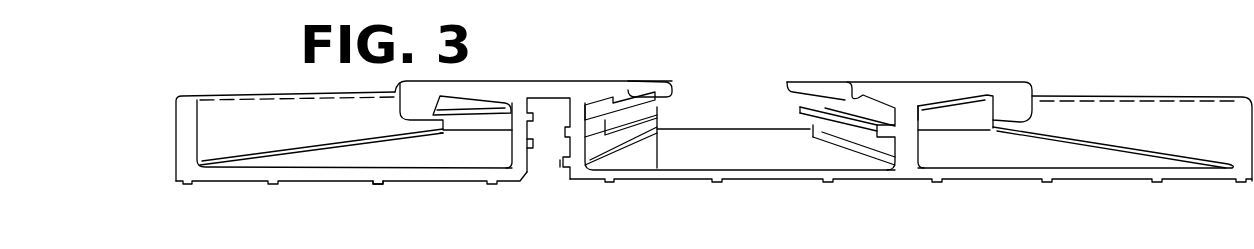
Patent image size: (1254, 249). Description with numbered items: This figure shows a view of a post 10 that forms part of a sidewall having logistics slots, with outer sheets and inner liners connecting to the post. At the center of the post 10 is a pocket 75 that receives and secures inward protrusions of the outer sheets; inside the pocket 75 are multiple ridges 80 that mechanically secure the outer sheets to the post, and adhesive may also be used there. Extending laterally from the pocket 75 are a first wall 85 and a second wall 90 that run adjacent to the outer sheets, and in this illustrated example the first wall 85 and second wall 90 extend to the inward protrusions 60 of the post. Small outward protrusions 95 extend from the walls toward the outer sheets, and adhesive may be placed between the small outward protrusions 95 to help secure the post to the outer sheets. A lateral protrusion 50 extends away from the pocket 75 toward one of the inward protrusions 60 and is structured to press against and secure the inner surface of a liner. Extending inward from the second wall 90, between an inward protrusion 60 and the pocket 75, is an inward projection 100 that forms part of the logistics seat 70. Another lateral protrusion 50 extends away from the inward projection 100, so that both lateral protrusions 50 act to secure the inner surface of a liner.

The post 10 is at (798, 60).
The lateral protrusion 50 is at (478, 94).
The inward protrusion 60 is at (227, 113).
The logistics seat 70 is at (607, 112).
The pocket 75 is at (552, 92).
The ridges 80 is at (560, 162).
The first wall 85 is at (317, 176).
The second wall 90 is at (727, 150).
The small outward protrusions 95 is at (380, 183).
The inward projection 100 is at (920, 95).